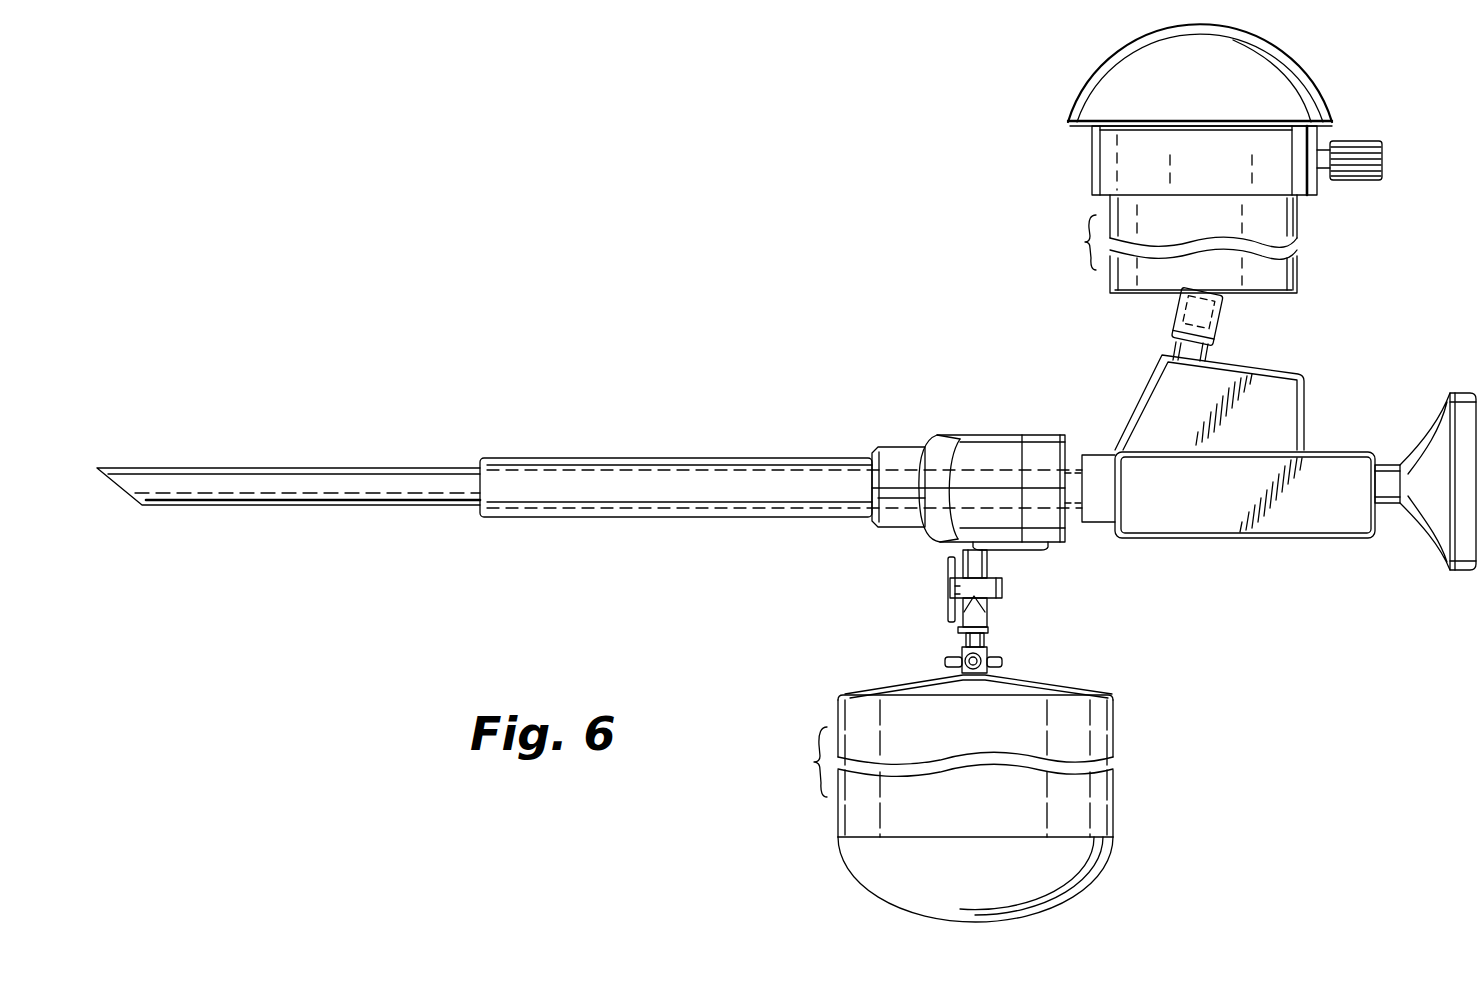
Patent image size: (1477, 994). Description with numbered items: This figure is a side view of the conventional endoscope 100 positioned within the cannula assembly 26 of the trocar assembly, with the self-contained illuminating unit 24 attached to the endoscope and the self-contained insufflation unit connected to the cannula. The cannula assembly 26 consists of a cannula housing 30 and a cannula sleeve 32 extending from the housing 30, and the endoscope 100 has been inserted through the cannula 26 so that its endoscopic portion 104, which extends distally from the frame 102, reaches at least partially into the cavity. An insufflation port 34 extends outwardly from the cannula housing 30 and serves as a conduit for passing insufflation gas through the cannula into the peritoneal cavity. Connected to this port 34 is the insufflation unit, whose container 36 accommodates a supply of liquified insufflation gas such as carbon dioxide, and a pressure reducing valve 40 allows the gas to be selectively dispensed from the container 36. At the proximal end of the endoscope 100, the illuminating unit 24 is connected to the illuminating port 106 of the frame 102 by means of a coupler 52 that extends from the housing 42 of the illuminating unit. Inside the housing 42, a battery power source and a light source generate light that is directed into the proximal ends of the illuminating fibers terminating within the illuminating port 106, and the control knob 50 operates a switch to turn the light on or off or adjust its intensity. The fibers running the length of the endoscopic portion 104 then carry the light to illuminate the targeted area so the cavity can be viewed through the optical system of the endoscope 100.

The self-contained illuminating unit 24 is at (1335, 234).
The cannula assembly 26 is at (868, 420).
The cannula housing 30 is at (967, 437).
The cannula sleeve 32 is at (685, 458).
The insufflation port 34 is at (985, 606).
The container 36 is at (958, 823).
The pressure reducing valve 40 is at (943, 663).
The housing 42 is at (1180, 233).
The control knob 50 is at (1366, 137).
The coupler 52 is at (1173, 322).
The endoscope 100 is at (1189, 570).
The frame 102 is at (1188, 507).
The endoscopic portion 104 is at (300, 487).
The illuminating port 106 is at (1223, 323).